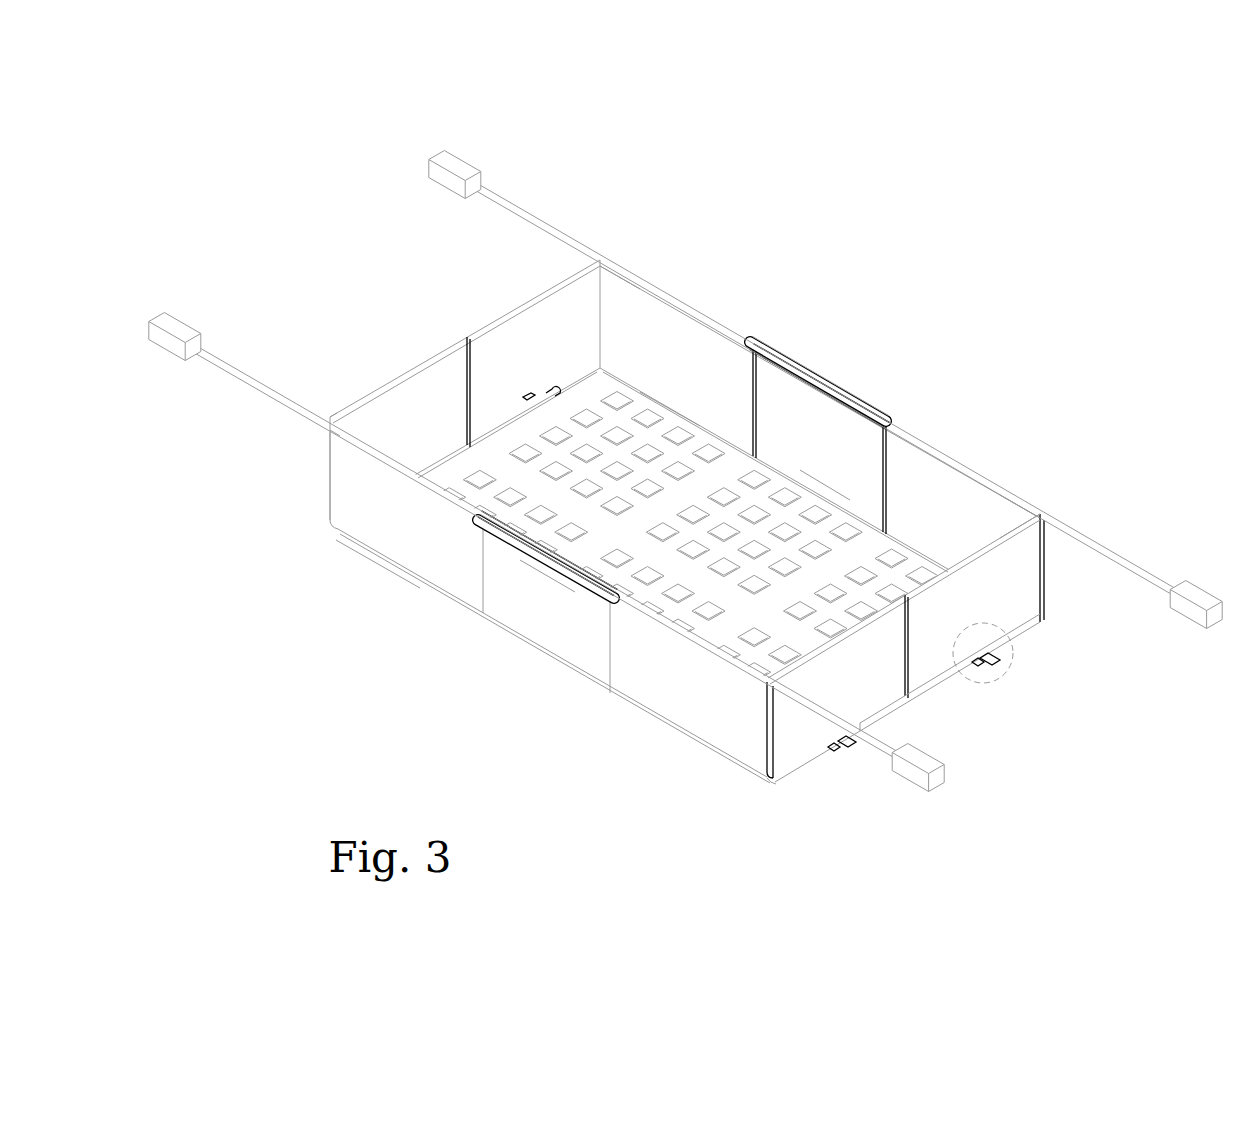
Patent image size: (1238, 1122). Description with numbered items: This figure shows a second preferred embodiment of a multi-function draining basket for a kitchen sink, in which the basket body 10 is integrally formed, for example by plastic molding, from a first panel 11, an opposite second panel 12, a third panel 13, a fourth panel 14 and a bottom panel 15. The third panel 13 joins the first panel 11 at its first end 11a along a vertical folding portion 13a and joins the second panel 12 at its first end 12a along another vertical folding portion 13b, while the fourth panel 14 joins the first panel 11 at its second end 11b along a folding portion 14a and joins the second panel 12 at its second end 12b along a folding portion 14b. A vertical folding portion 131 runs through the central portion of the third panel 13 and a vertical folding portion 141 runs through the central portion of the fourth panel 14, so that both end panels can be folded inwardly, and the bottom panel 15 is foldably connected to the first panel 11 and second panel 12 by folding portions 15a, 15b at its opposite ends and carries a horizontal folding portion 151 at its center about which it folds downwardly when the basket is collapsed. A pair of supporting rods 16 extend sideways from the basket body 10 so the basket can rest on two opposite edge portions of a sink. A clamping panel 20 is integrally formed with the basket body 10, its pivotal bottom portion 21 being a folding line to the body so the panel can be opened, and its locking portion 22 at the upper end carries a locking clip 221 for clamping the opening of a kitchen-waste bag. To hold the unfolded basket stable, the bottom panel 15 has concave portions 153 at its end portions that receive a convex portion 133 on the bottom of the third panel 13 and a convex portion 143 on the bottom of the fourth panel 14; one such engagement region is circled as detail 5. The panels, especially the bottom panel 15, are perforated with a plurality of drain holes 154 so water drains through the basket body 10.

The basket body 10 is at (689, 488).
The first panel 11 is at (493, 629).
The first end of the first panel 11a is at (340, 493).
The second end of the first panel 11b is at (765, 712).
The second panel 12 is at (902, 384).
The first end of the second panel 12a is at (617, 257).
The second end of the second panel 12b is at (1045, 512).
The third panel 13 is at (440, 281).
The folding portion 13a is at (330, 466).
The folding portion 13b is at (583, 280).
The vertical folding portion 131 is at (470, 338).
The convex portion 133 is at (557, 385).
The fourth panel 14 is at (938, 706).
The folding portion 14a is at (778, 778).
The folding portion 14b is at (1043, 550).
The vertical folding portion 141 is at (952, 670).
The convex portion 143 is at (852, 745).
The bottom panel 15 is at (609, 471).
The folding portion 15a is at (357, 542).
The folding portion 15b is at (690, 423).
The horizontal folding portion 151 is at (877, 530).
The concave portion 153 is at (527, 405).
The drain holes 154 is at (650, 420).
The supporting rods 16 is at (464, 166).
The clamping panel 20 is at (660, 496).
The pivotal bottom portion 21 is at (815, 493).
The locking portion 22 is at (848, 396).
The locking clip 221 is at (790, 347).
The detail region 5 is at (1027, 658).